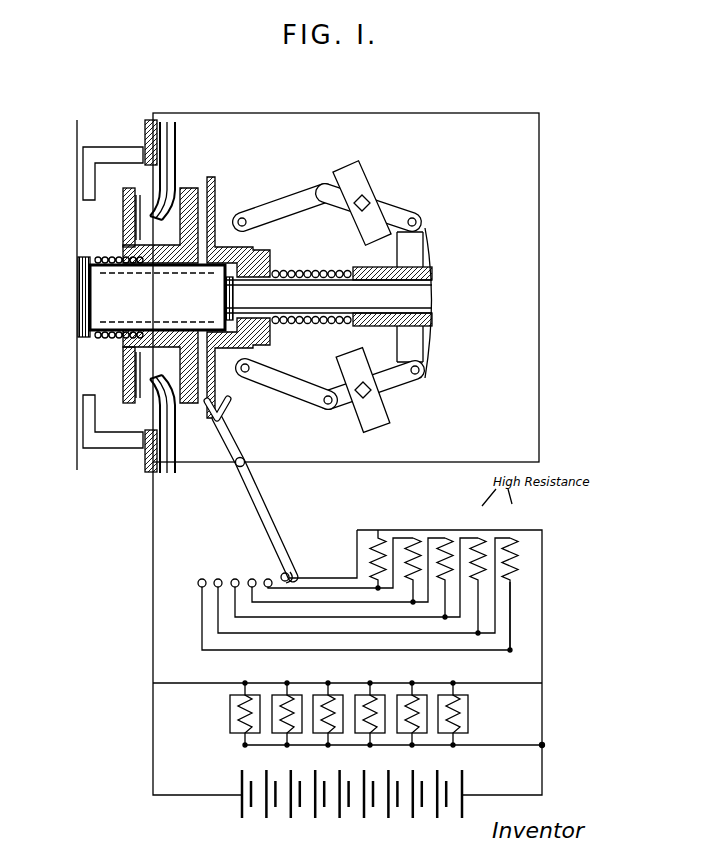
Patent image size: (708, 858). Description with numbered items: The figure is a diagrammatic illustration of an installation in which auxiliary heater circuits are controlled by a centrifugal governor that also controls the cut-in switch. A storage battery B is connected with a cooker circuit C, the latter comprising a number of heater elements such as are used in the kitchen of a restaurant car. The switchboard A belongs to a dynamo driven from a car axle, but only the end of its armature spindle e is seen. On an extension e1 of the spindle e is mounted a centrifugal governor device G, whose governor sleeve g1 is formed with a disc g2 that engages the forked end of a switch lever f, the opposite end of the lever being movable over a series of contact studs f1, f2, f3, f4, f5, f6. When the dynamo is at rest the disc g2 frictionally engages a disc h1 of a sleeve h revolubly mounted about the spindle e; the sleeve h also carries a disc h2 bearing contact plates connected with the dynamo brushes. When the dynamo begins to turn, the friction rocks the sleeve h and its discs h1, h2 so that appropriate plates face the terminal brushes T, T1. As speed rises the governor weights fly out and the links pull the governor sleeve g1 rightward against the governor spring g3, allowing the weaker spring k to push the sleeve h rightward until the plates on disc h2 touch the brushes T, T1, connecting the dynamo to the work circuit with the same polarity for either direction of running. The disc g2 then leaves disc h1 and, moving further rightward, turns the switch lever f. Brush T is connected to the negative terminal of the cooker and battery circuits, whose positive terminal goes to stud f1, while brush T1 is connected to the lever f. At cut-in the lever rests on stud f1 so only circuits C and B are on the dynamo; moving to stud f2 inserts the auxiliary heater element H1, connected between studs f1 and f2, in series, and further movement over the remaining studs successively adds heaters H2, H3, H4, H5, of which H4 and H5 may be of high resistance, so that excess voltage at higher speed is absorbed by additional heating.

The switchboard A is at (58, 295).
The terminal brush T is at (165, 415).
The terminal brush T1 is at (170, 167).
The sleeve h is at (160, 295).
The disc h1 is at (192, 195).
The disc h2 is at (123, 215).
The armature spindle e is at (190, 269).
The spindle extension e1 is at (347, 303).
The spring k is at (110, 338).
The centrifugal governor device G is at (372, 297).
The governor sleeve g1 is at (278, 330).
The disc g2 is at (222, 385).
The governor spring g3 is at (303, 274).
The switch lever f is at (203, 412).
The contact stud f1 is at (292, 580).
The contact stud f2 is at (295, 572).
The contact stud f3 is at (268, 579).
The contact stud f4 is at (237, 579).
The contact stud f5 is at (218, 579).
The contact stud f6 is at (200, 580).
The auxiliary heater element H1 is at (378, 538).
The auxiliary heater element H2 is at (413, 538).
The auxiliary heater element H3 is at (445, 538).
The auxiliary heater element H4 is at (478, 538).
The auxiliary heater element H5 is at (510, 538).
The cooker circuit C is at (349, 714).
The storage battery B is at (352, 811).